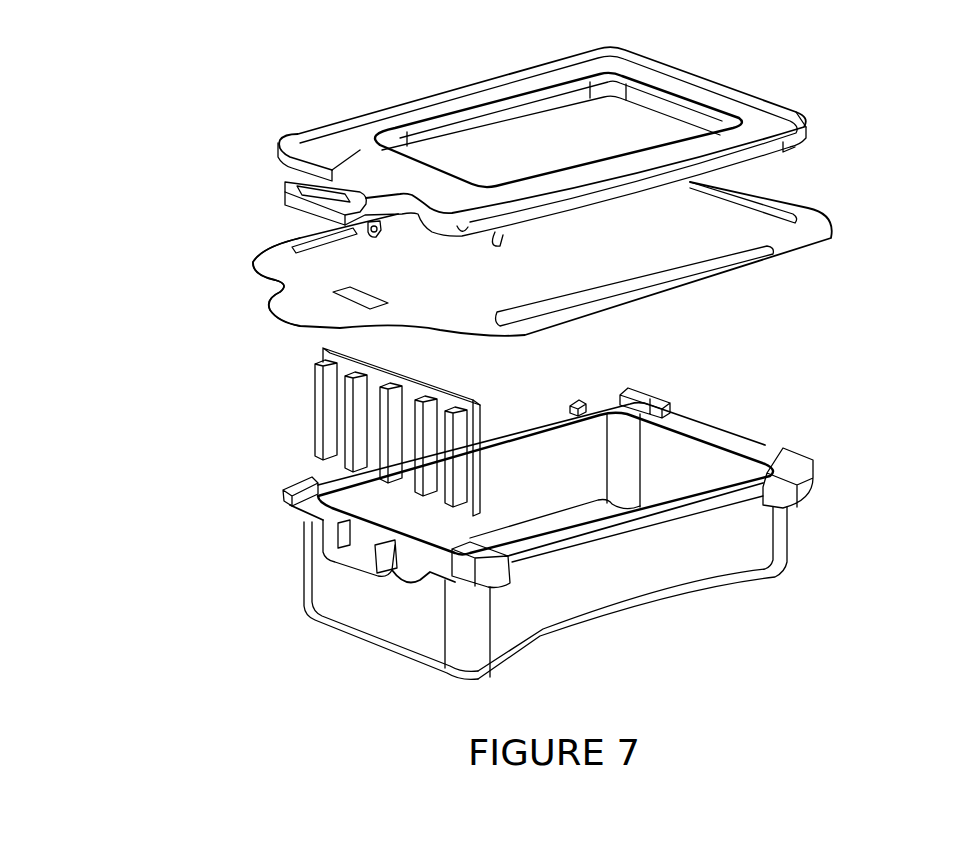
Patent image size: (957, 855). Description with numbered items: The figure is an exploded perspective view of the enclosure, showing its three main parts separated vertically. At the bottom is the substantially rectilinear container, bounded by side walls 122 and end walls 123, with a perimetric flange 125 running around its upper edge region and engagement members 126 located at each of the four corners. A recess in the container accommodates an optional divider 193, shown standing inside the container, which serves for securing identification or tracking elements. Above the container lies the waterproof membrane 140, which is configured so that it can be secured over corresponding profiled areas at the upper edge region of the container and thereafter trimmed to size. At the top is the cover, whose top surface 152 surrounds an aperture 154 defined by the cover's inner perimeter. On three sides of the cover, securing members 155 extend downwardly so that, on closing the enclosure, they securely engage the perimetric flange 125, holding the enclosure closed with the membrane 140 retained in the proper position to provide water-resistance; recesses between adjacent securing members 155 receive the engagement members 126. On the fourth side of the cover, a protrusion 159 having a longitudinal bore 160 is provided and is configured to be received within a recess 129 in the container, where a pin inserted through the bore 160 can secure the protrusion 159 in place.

The side walls 122 is at (630, 572).
The end walls 123 is at (340, 603).
The perimetric flange 125 is at (720, 432).
The engagement members 126 is at (803, 456).
The recess 129 is at (357, 560).
The waterproof membrane 140 is at (325, 305).
The top surface 152 is at (317, 147).
The aperture 154 is at (560, 130).
The securing members 155 is at (785, 155).
The protrusion 159 is at (368, 233).
The longitudinal bore 160 is at (256, 266).
The divider 193 is at (338, 408).